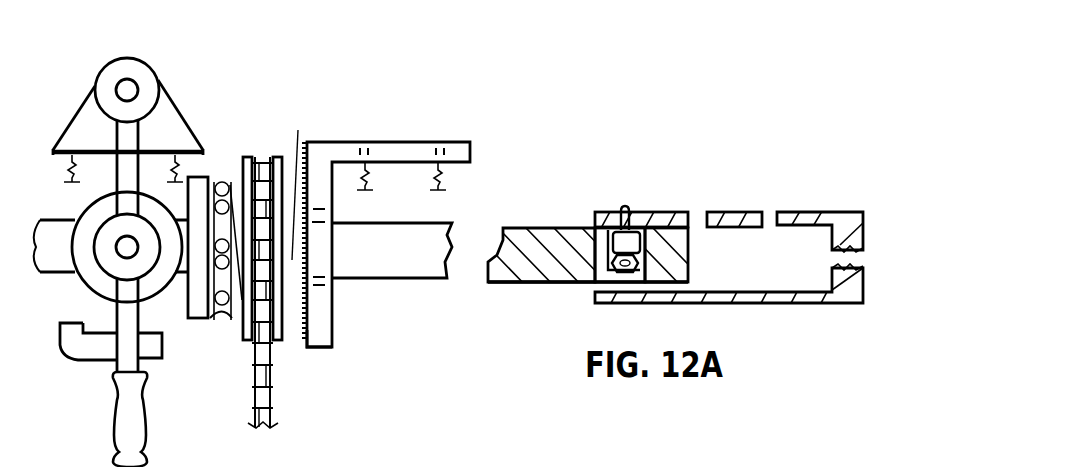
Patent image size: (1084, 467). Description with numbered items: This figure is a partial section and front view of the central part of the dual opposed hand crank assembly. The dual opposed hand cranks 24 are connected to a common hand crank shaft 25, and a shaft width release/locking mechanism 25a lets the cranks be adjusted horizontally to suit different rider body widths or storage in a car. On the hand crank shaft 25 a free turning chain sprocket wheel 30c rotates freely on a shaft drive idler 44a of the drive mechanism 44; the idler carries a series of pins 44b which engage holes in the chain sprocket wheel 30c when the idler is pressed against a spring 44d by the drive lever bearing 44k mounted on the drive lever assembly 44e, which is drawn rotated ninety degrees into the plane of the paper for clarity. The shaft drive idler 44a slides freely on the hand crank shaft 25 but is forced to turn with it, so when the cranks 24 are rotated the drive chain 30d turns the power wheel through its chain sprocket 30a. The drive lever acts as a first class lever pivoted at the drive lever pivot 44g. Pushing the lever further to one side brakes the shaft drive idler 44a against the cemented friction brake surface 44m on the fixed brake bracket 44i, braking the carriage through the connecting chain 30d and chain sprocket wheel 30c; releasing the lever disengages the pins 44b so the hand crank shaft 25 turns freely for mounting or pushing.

The shaft drive idler mechanism 44 is at (562, 84).
The drive lever pivot 44g is at (137, 92).
The drive lever bearing 44k is at (102, 210).
The drive lever assembly 44e is at (118, 295).
The pins 44b is at (88, 356).
The shaft drive idler 44a is at (187, 315).
The spring 44d is at (228, 178).
The chain sprocket wheel 30c is at (272, 148).
The drive chain 30d is at (252, 357).
The fixed brake bracket 44i is at (357, 148).
The cemented friction brake surface 44m is at (303, 350).
The hand crank shaft 25 is at (388, 263).
The shaft width release/locking mechanism 25a is at (627, 210).
The dual opposed hand cranks 24 is at (772, 295).
The chain sprocket 30a is at (849, 452).